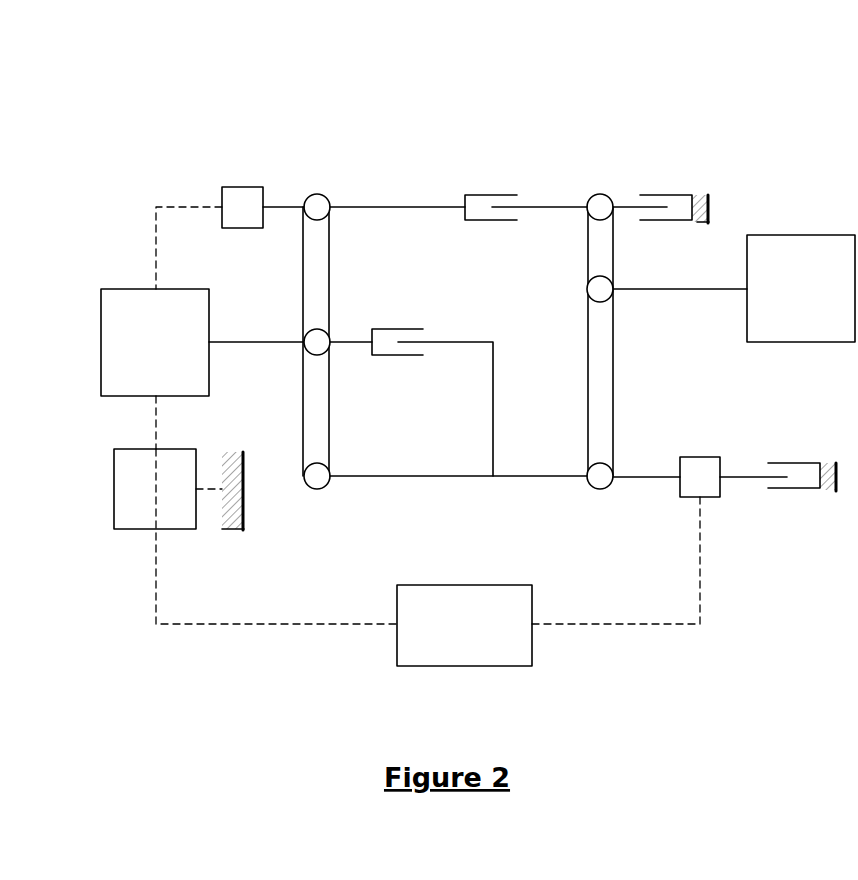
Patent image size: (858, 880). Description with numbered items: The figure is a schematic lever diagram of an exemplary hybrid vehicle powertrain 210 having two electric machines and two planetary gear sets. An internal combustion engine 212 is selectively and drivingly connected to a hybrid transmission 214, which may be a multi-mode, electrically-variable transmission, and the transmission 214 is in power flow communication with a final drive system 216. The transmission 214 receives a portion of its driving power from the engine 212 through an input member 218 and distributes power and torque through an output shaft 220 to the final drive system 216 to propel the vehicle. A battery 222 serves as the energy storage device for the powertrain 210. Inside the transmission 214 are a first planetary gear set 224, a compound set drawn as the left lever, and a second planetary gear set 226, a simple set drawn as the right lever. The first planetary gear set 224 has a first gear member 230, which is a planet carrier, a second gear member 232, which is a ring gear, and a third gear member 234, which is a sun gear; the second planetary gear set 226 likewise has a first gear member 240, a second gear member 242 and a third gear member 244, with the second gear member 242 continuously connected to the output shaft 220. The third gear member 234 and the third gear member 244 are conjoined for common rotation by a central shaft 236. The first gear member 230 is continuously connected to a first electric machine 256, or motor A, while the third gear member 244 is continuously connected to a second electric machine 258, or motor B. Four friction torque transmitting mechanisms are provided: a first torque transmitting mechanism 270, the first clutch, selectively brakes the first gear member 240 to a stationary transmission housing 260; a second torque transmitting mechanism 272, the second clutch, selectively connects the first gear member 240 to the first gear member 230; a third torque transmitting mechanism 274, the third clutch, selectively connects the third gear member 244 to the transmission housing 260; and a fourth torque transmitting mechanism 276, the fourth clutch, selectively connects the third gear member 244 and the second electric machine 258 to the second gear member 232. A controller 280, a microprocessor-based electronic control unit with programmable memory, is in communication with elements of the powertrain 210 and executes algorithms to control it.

The vehicle powertrain system 210 is at (249, 646).
The internal combustion engine 212 is at (122, 288).
The hybrid transmission 214 is at (515, 82).
The final drive system 216 is at (815, 342).
The input member 218 is at (250, 341).
The output shaft 220 is at (713, 289).
The battery 222 is at (437, 585).
The first planetary gear set 224 is at (316, 143).
The second planetary gear set 226 is at (600, 143).
The first gear member 230 is at (322, 174).
The second gear member 232 is at (304, 348).
The third gear member 234 is at (317, 490).
The central shaft 236 is at (458, 477).
The first gear member 240 is at (600, 172).
The second gear member 242 is at (588, 291).
The third gear member 244 is at (600, 490).
The first electric machine 256 is at (243, 187).
The second electric machine 258 is at (700, 457).
The transmission housing 260 is at (236, 530).
The first torque transmitting mechanism 270 is at (667, 195).
The second torque transmitting mechanism 272 is at (492, 195).
The third torque transmitting mechanism 274 is at (793, 463).
The fourth torque transmitting mechanism 276 is at (398, 329).
The controller 280 is at (120, 530).